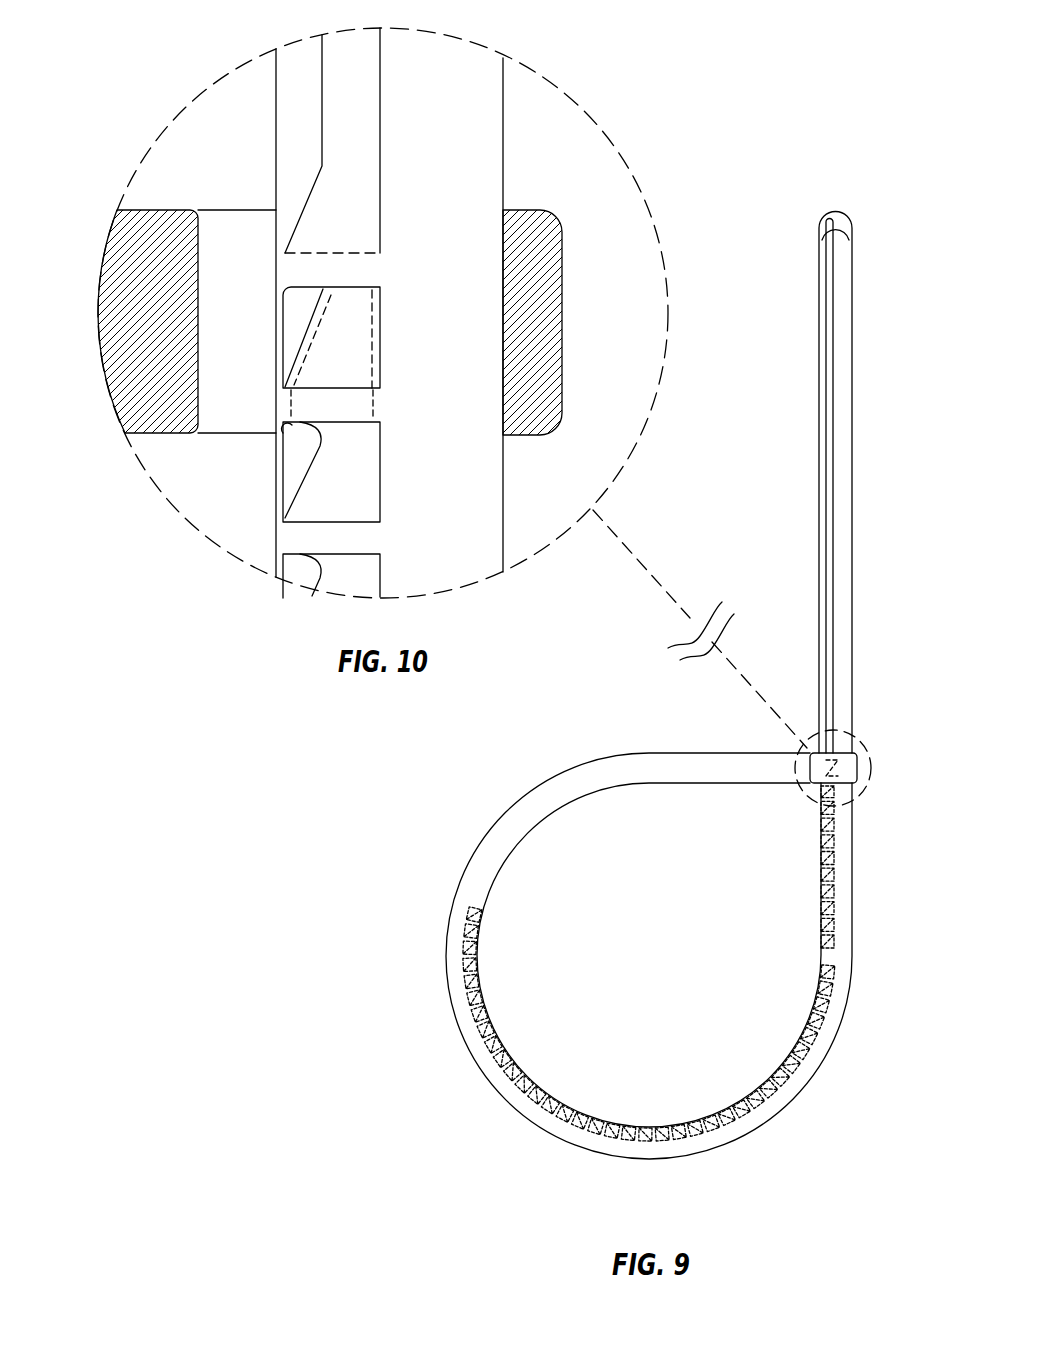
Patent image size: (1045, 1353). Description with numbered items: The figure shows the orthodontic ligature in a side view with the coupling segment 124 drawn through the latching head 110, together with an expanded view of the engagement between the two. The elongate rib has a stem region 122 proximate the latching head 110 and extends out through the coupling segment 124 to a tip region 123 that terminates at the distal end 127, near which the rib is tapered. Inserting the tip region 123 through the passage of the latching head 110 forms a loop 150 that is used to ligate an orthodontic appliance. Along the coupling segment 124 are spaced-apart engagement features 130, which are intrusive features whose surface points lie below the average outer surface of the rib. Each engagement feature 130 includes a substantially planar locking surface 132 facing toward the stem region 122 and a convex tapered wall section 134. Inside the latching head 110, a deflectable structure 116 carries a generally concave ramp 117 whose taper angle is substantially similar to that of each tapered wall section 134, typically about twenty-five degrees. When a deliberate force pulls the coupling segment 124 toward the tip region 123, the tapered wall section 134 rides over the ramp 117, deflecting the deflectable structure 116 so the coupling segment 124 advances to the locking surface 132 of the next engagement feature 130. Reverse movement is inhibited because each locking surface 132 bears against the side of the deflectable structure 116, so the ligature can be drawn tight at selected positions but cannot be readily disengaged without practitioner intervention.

In FIG. 10, the latching head 110 is at (530, 218).
In FIG. 9, the latching head 110 is at (855, 770).
In FIG. 10, the deflectable structure 116 is at (358, 322).
In FIG. 10, the ramp 117 is at (318, 330).
In FIG. 9, the stem region 122 is at (572, 788).
In FIG. 9, the tip region 123 is at (838, 468).
In FIG. 9, the coupling segment 124 is at (637, 1145).
In FIG. 9, the distal end 127 is at (833, 213).
In FIG. 10, the engagement feature 130 is at (353, 488).
In FIG. 9, the engagement feature 130 is at (835, 888).
In FIG. 10, the locking surface 132 is at (303, 297).
In FIG. 10, the tapered wall section 134 is at (313, 352).
In FIG. 9, the loop 150 is at (503, 1062).